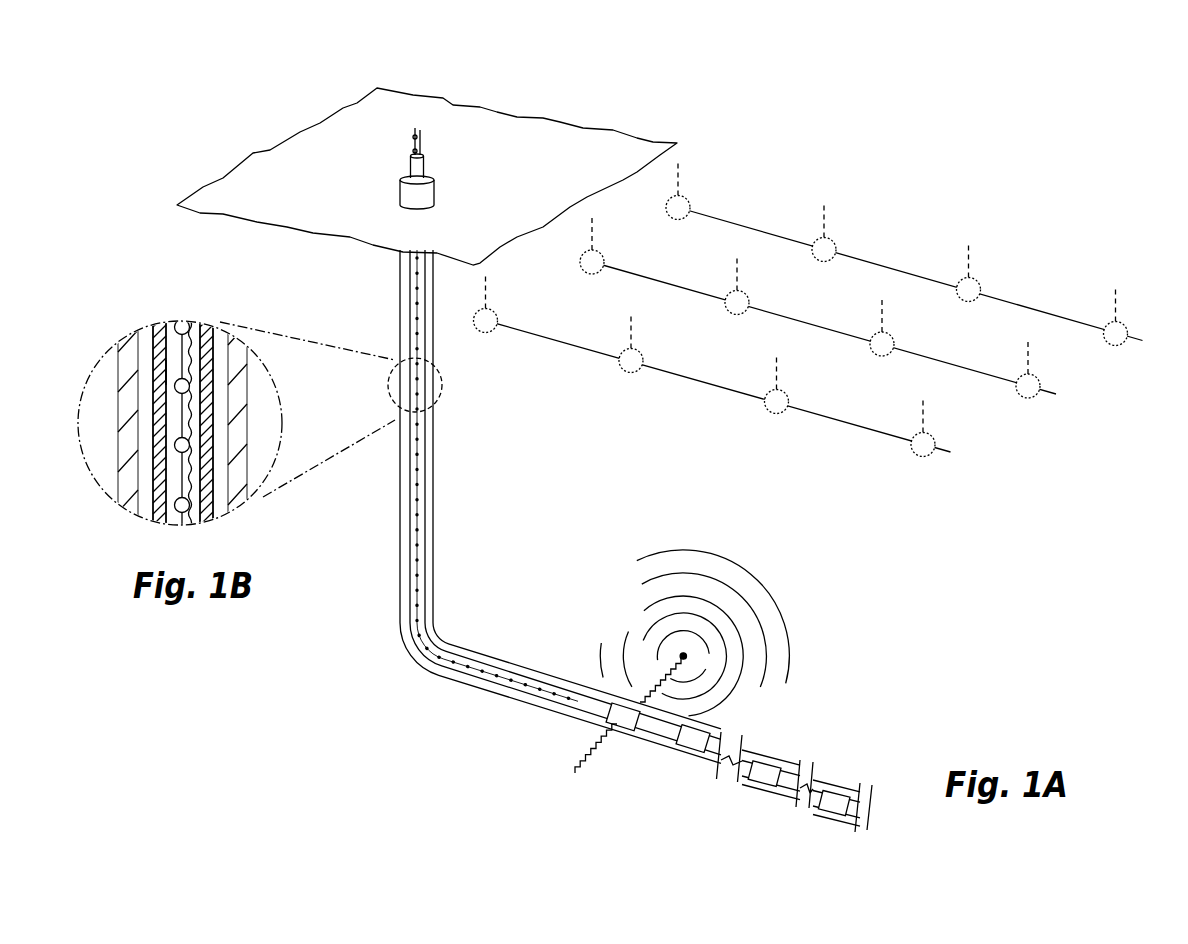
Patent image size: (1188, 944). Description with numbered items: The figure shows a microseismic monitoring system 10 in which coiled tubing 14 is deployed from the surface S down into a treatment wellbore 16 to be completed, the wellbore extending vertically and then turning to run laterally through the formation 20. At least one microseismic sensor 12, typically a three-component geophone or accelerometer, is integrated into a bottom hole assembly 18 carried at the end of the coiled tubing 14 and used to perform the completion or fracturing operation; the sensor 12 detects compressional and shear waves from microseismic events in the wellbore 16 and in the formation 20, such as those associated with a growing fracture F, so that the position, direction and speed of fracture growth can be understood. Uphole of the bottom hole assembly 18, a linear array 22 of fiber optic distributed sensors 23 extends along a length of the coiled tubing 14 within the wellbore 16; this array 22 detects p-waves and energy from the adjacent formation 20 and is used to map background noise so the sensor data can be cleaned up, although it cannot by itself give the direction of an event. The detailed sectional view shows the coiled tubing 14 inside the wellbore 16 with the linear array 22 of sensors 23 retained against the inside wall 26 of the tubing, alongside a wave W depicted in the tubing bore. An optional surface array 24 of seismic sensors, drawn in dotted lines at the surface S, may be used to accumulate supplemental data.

In FIG. 1A, the microseismic monitoring system 10 is at (555, 541).
In FIG. 1A, the microseismic sensor 12 is at (840, 797).
In FIG. 1A, the coiled tubing 14 is at (425, 592).
In FIG. 1B, the coiled tubing 14 is at (213, 431).
In FIG. 1A, the wellbore 16 is at (433, 483).
In FIG. 1B, the wellbore 16 is at (247, 382).
In FIG. 1A, the bottom hole assembly 18 is at (630, 731).
In FIG. 1A, the formation 20 is at (835, 586).
In FIG. 1A, the linear array 22 is at (417, 557).
In FIG. 1B, the linear array 22 is at (182, 480).
In FIG. 1B, the distributed sensors 23 is at (173, 447).
In FIG. 1A, the surface array 24 is at (962, 210).
In FIG. 1B, the inside wall 26 is at (163, 372).
In FIG. 1A, the surface S is at (493, 179).
In FIG. 1A, the fracture F is at (661, 669).
In FIG. 1B, the wave W is at (190, 474).